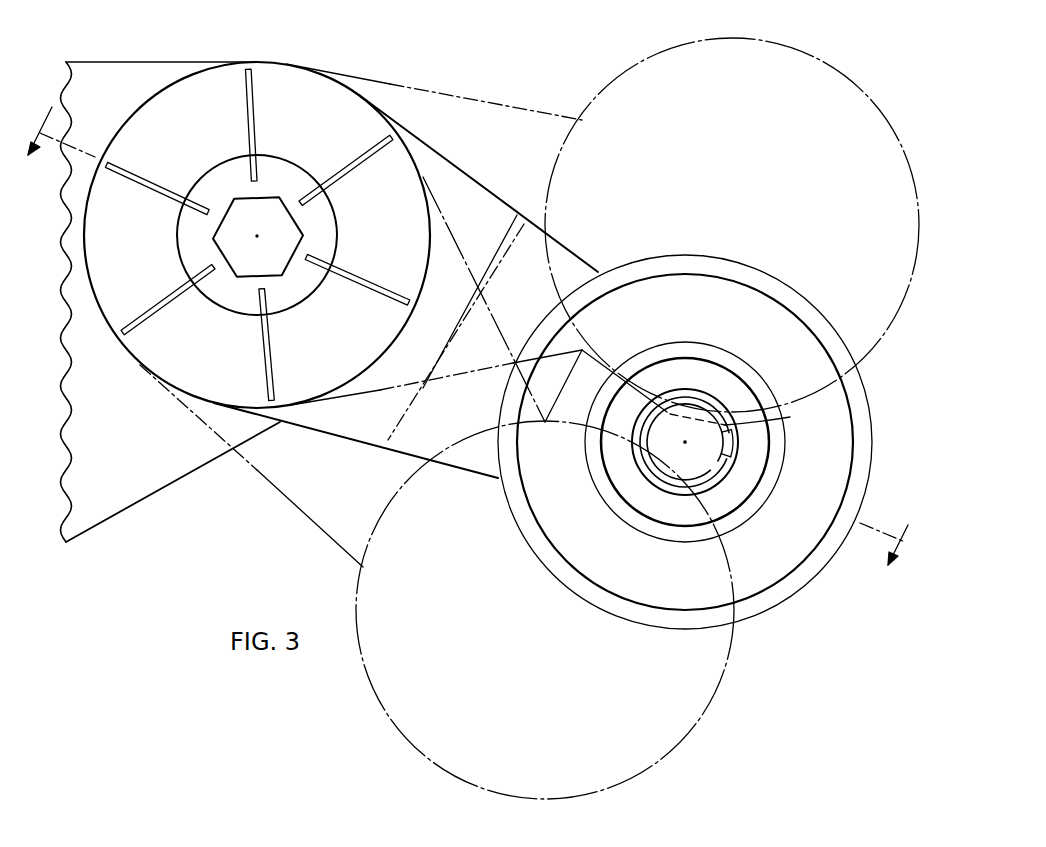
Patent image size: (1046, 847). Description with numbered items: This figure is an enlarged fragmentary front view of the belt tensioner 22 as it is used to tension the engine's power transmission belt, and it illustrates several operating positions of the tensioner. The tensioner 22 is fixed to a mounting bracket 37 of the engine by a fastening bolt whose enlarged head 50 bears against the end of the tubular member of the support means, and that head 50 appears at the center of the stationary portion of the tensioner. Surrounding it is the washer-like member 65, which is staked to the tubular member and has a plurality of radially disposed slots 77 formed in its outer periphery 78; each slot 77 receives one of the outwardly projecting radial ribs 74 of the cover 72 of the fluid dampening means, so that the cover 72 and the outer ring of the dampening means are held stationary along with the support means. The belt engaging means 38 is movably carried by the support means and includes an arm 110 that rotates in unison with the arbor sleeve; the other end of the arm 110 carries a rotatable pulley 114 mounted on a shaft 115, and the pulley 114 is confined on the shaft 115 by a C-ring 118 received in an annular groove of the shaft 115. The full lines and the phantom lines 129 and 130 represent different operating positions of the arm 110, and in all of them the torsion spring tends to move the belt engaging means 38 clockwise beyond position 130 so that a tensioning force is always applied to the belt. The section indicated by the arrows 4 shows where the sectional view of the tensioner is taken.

The section line 4- 4 is at (464, 352).
The belt tensioner 22 is at (372, 97).
The mounting bracket 37 is at (107, 70).
The belt engaging means 38 is at (878, 393).
The enlarged head 50 is at (214, 237).
The washer-like member 65 is at (331, 245).
The cover 72 is at (305, 80).
The ribs or projections 74 is at (242, 111).
The radially disposed slots 77 is at (303, 190).
The outer periphery 78 is at (240, 317).
The arm 110 is at (515, 100).
The pulley 114 is at (853, 82).
The shaft 115 is at (662, 473).
The C-ring 118 is at (737, 443).
The phantom line position 129 is at (477, 98).
The phantom line position 130 is at (285, 497).